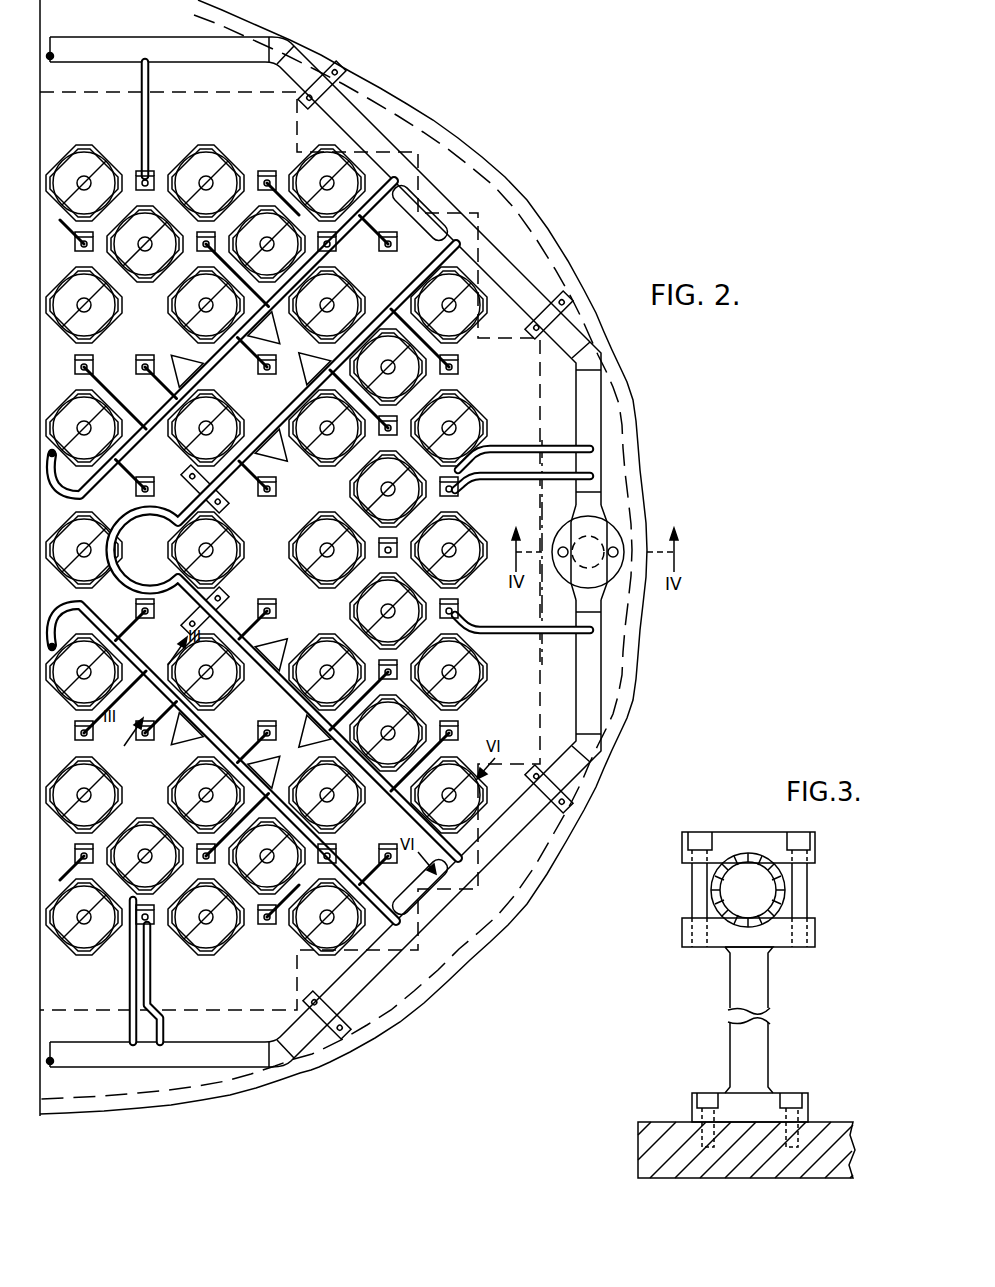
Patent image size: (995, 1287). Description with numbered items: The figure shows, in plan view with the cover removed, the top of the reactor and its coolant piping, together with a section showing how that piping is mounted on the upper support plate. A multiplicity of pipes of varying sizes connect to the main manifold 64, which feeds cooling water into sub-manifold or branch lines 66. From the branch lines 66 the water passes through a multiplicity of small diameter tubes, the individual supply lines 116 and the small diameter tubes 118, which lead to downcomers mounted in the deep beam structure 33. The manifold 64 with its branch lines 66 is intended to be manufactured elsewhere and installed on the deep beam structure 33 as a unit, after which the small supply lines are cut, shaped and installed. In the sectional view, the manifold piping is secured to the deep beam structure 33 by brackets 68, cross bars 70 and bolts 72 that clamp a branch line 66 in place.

In FIG. 2, the main manifold 64 is at (165, 47).
In FIG. 2, the branch lines 66 is at (402, 190).
In FIG. 3, the branch lines 66 is at (800, 878).
In FIG. 2, the individual supply lines 116 is at (395, 236).
In FIG. 2, the small diameter tubes 118 is at (440, 354).
In FIG. 3, the bolts 72 is at (810, 893).
In FIG. 3, the cross bars 70 is at (815, 932).
In FIG. 3, the brackets 68 is at (772, 985).
In FIG. 3, the deep beam structure 33 is at (828, 1128).